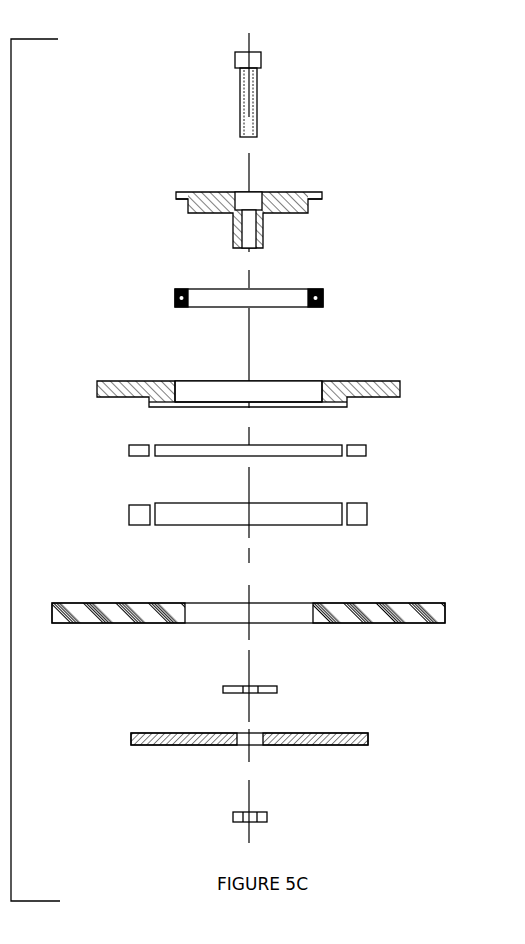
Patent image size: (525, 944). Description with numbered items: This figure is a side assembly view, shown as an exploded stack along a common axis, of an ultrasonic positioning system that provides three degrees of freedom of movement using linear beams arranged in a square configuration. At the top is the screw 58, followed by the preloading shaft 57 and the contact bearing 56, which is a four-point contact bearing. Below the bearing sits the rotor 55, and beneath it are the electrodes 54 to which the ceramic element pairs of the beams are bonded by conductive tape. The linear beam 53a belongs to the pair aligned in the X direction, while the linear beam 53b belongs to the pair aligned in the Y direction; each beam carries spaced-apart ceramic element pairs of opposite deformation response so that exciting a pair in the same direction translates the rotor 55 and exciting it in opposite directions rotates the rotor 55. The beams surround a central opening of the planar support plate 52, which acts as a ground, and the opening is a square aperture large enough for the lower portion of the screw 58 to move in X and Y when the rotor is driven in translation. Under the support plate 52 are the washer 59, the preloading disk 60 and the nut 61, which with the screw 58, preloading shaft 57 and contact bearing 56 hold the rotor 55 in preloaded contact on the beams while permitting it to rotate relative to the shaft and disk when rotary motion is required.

The planar support plate 52 is at (330, 603).
The linear beam 53a is at (310, 502).
The linear beam 53b is at (370, 512).
The electrode 54 is at (370, 447).
The rotor 55 is at (357, 379).
The contact bearing 56 is at (300, 290).
The preloading shaft 57 is at (307, 193).
The screw 58 is at (258, 85).
The washer 59 is at (282, 690).
The preloading disk 60 is at (370, 738).
The nut 61 is at (270, 817).